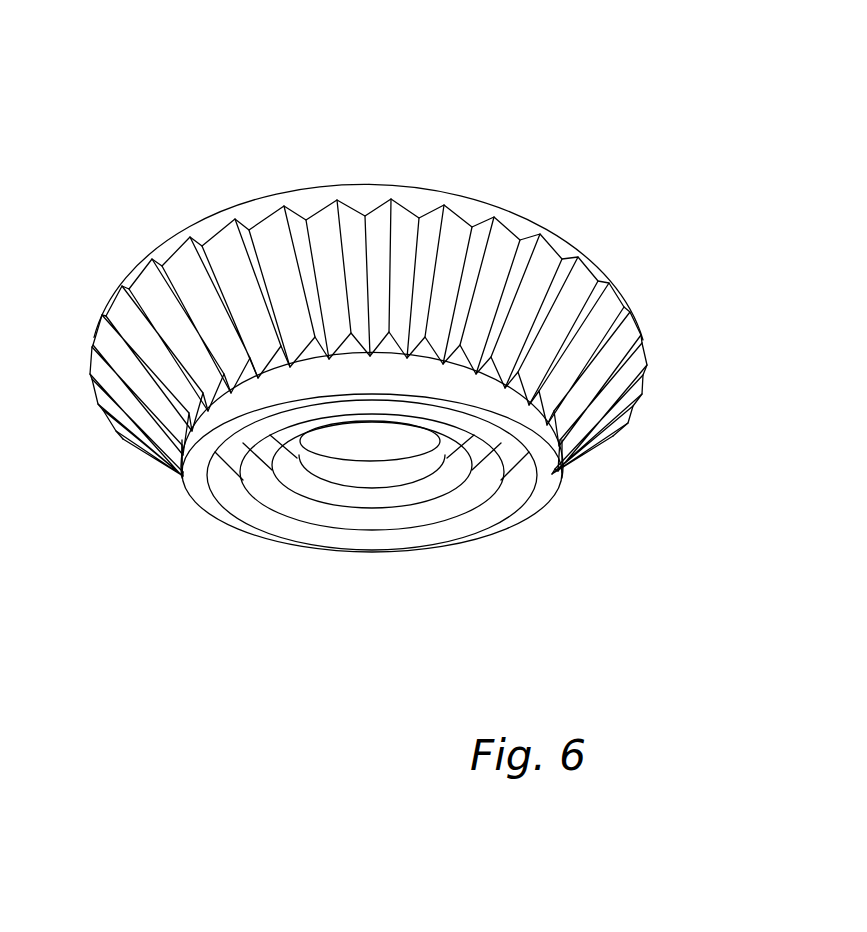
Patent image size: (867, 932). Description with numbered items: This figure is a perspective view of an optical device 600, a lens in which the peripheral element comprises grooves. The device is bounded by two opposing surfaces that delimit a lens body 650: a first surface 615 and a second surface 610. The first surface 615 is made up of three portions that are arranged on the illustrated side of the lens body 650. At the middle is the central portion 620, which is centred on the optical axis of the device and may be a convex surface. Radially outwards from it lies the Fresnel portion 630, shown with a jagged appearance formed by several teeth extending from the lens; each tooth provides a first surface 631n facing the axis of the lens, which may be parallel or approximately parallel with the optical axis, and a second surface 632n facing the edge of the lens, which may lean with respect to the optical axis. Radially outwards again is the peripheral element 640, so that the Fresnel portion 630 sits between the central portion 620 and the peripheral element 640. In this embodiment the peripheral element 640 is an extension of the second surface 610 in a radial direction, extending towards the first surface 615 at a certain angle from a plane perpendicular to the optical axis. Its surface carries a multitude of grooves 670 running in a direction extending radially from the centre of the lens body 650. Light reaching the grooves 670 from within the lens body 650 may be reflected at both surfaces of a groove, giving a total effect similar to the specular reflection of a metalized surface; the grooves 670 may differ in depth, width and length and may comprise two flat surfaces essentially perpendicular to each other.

The optical device 600 is at (203, 112).
The second surface 610 is at (242, 208).
The first surface 615 is at (420, 550).
The central portion 620 is at (378, 440).
The Fresnel portion 630 is at (543, 460).
The first surface of a tooth 631n is at (237, 493).
The second surface of a tooth 632n is at (193, 458).
The peripheral element 640 is at (630, 304).
The lens body 650 is at (553, 229).
The grooves 670 is at (565, 297).